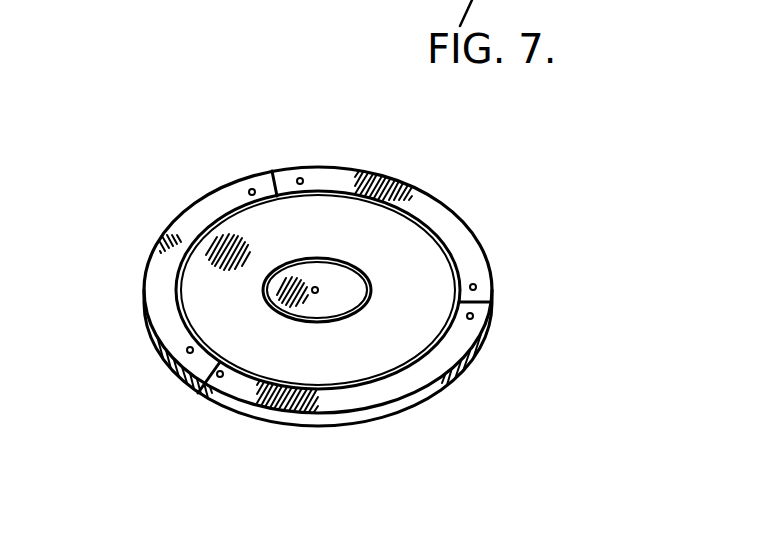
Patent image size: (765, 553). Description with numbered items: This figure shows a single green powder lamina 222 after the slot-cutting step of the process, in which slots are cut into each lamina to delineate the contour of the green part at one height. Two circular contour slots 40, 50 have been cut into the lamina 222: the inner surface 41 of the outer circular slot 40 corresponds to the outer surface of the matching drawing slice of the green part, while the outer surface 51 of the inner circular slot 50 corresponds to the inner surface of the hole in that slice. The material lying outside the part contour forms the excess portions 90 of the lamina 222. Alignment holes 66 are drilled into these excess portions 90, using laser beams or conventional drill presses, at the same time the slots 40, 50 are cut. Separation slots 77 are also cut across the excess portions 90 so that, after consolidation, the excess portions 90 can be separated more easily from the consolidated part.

The green lamina 222 is at (480, 388).
The circular contour slot 40 is at (427, 212).
The inner surface of circular slot 41 is at (435, 236).
The circular contour slot 50 is at (263, 291).
The outer surface of slot 51 is at (272, 310).
The alignment holes 66 is at (252, 188).
The separation slots 77 is at (274, 175).
The excess portions 90 is at (402, 185).